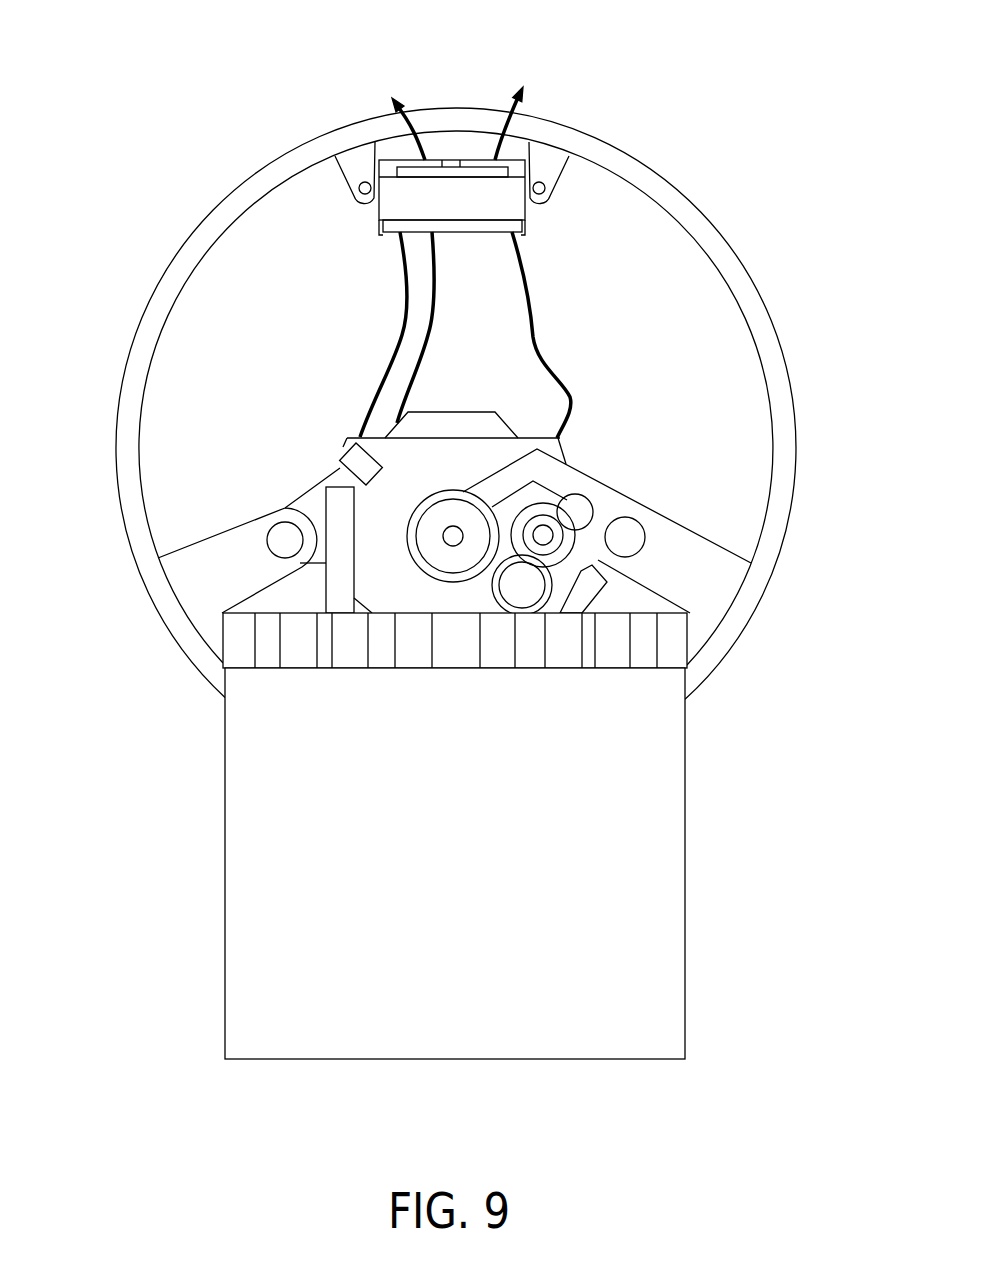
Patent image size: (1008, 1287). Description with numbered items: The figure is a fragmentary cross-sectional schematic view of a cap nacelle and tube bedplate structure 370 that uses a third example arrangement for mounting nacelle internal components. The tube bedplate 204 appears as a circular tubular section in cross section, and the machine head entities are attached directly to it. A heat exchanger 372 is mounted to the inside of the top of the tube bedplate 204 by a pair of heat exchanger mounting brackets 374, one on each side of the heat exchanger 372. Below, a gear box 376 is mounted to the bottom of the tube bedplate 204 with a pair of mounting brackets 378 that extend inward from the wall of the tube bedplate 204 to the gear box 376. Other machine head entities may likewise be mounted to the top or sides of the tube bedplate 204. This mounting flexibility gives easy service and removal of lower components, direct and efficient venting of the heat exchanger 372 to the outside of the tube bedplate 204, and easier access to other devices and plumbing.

The tube bedplate 204 is at (755, 318).
The cap nacelle and tube bedplate structure 370 is at (645, 35).
The heat exchanger 372 is at (389, 185).
The heat exchanger mounting brackets 374 is at (358, 162).
The gear box 376 is at (383, 453).
The mounting brackets 378 is at (190, 580).